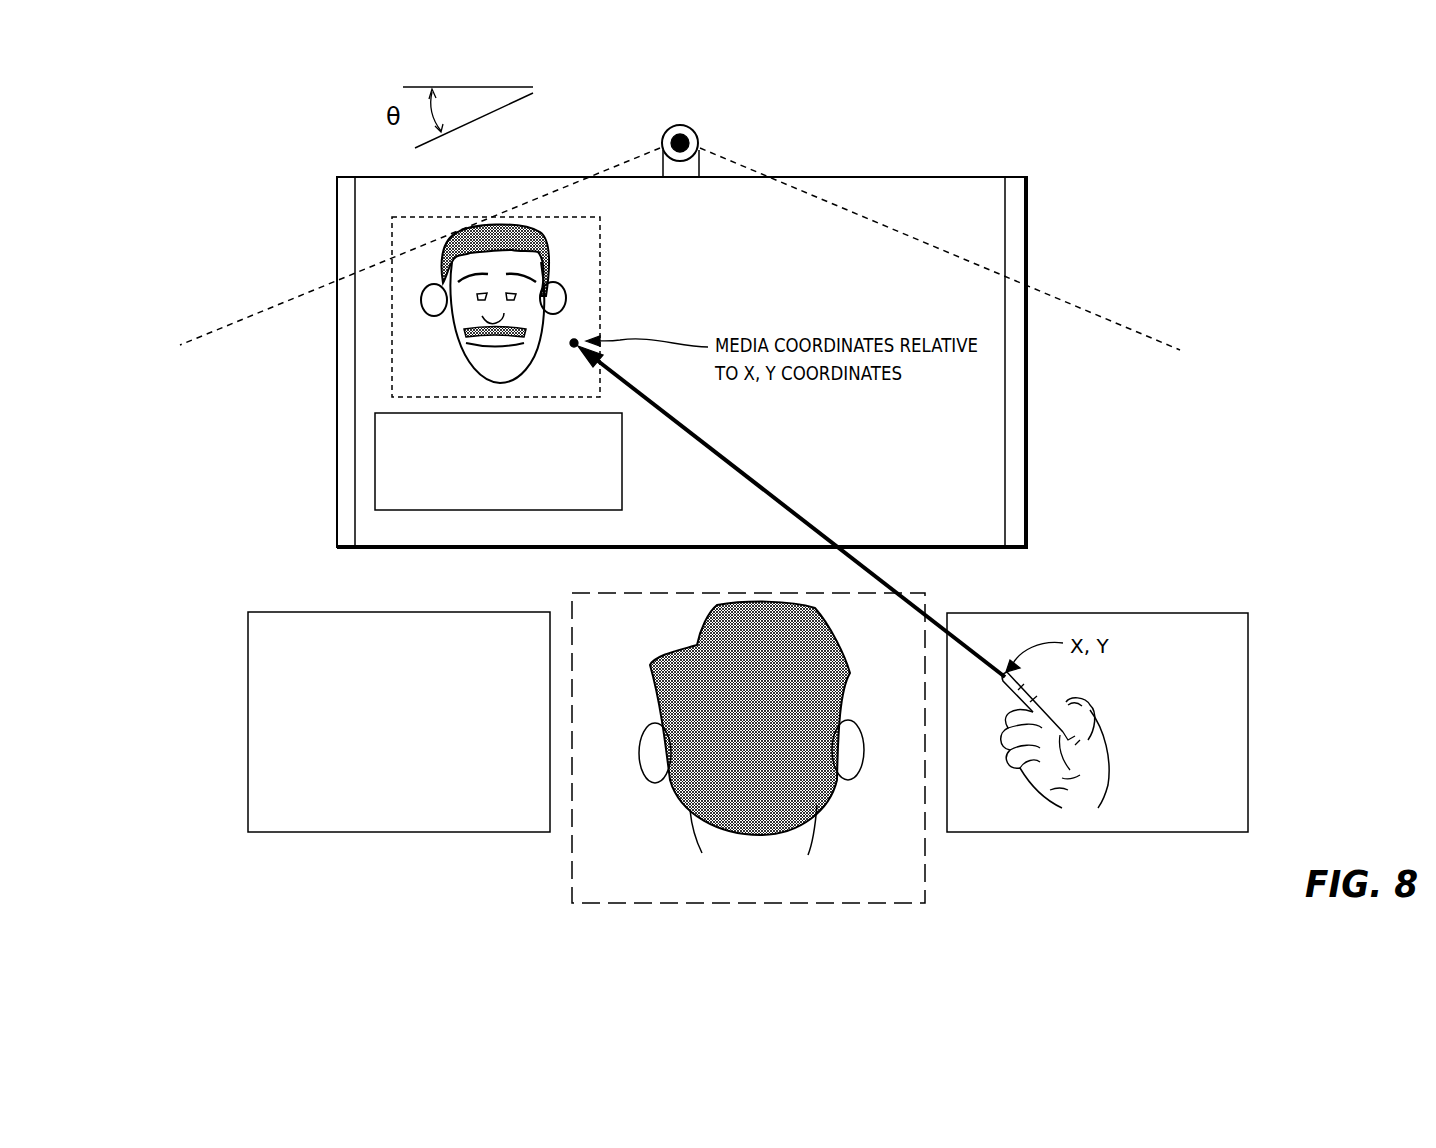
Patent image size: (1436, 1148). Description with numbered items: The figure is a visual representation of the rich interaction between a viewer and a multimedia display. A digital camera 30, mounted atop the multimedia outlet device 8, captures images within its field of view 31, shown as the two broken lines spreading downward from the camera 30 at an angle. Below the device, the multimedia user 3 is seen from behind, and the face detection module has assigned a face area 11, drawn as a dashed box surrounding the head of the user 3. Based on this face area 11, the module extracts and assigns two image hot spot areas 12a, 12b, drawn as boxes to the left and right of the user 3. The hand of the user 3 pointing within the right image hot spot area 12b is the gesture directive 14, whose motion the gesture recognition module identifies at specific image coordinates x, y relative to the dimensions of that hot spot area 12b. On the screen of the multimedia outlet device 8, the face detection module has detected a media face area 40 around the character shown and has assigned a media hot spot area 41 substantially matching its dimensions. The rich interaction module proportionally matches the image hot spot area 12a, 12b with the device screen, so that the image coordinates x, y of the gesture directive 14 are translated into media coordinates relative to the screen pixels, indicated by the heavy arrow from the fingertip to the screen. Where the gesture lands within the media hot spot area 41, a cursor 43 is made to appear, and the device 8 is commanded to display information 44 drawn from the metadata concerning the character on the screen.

The digital camera 30 is at (674, 125).
The field of view 31 is at (745, 162).
The multimedia outlet device 8 is at (1027, 486).
The media face area 40 is at (392, 230).
The media hot spot area 41 is at (460, 365).
The cursor 43 is at (576, 340).
The information 44 is at (375, 462).
The image hot spot area 12a is at (248, 695).
The image hot spot area 12b is at (1247, 650).
The face area 11 is at (572, 862).
The multimedia user 3 is at (853, 773).
The gesture directive 14 is at (1087, 790).